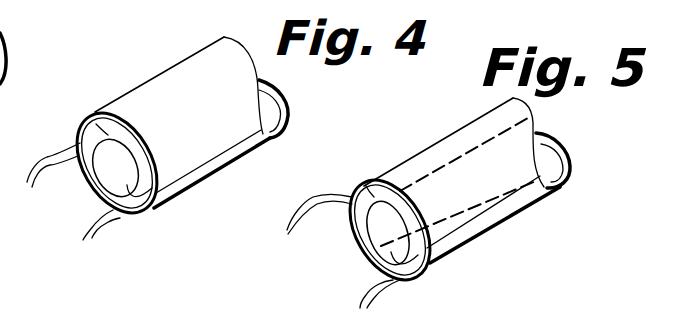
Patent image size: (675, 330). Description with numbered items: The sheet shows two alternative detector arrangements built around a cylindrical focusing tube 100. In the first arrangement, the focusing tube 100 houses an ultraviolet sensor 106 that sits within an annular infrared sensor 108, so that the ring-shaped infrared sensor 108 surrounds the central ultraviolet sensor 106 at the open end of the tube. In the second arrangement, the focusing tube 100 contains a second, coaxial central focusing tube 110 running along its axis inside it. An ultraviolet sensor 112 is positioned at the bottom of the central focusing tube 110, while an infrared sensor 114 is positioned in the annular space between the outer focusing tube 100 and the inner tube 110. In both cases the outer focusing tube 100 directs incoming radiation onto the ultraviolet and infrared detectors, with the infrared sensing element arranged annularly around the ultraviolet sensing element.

In FIG. 4, the focusing tube 100 is at (183, 158).
In FIG. 5, the focusing tube 100 is at (497, 207).
In FIG. 4, the ultraviolet sensor 106 is at (112, 177).
In FIG. 4, the annular infrared sensor 108 is at (96, 131).
In FIG. 5, the central focusing tube 110 is at (392, 247).
In FIG. 5, the ultraviolet sensor 112 is at (378, 256).
In FIG. 5, the infrared sensor 114 is at (372, 188).